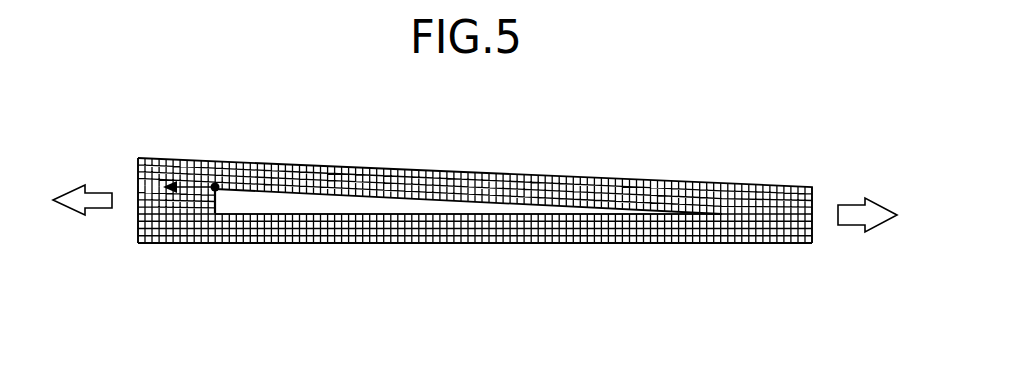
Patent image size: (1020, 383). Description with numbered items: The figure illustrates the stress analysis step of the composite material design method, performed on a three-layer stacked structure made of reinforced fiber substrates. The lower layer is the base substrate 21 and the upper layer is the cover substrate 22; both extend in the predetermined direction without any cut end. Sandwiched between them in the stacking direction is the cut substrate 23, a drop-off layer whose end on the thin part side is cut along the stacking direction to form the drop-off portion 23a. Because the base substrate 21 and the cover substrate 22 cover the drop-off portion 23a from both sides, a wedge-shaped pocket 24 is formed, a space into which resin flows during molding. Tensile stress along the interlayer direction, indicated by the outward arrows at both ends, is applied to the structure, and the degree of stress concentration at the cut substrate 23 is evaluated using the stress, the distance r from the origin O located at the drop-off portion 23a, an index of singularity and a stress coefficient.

The base substrate 21 is at (415, 243).
The cover substrate 22 is at (415, 170).
The cut substrate 23 is at (138, 202).
The drop-off portion 23a is at (222, 200).
The pocket 24 is at (315, 203).
The origin O is at (219, 190).
The distance from the origin r is at (188, 180).